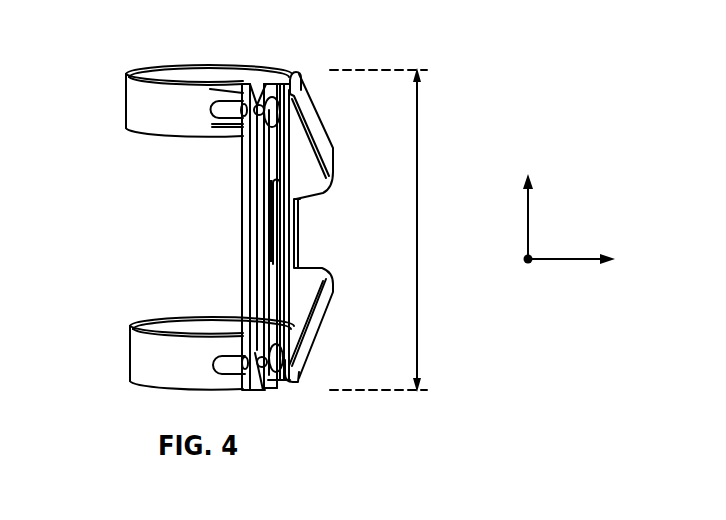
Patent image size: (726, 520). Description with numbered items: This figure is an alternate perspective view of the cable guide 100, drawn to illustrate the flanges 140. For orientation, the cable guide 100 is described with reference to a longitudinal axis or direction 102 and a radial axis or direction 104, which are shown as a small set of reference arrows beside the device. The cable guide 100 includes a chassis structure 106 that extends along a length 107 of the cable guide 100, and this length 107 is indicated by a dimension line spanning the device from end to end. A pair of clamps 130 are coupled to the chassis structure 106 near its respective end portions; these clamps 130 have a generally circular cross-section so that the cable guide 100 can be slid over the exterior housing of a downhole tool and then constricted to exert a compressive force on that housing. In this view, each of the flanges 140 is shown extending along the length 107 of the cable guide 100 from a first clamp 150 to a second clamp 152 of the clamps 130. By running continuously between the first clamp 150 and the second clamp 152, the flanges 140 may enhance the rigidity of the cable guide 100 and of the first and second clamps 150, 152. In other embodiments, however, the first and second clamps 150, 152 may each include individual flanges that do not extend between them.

The cable guide 100 is at (462, 66).
The longitudinal axis 102 is at (530, 219).
The radial axis 104 is at (572, 258).
The chassis structure 106 is at (297, 248).
The length 107 is at (418, 228).
The clamps 130 is at (149, 120).
The flanges 140 is at (248, 228).
The first clamp 150 is at (138, 108).
The second clamp 152 is at (138, 345).